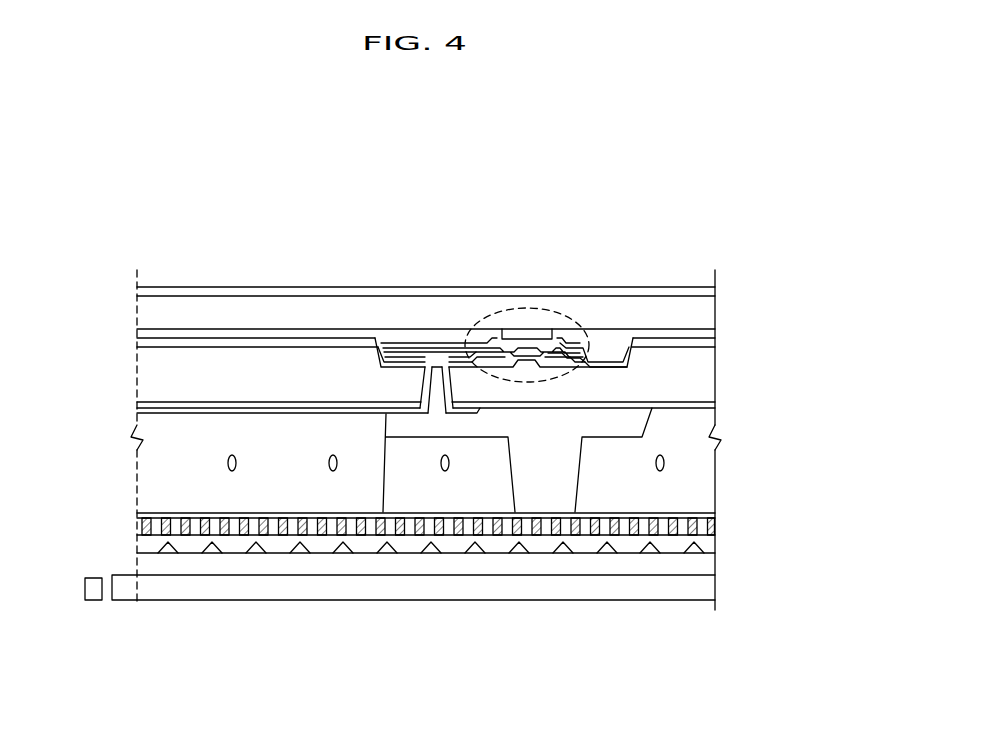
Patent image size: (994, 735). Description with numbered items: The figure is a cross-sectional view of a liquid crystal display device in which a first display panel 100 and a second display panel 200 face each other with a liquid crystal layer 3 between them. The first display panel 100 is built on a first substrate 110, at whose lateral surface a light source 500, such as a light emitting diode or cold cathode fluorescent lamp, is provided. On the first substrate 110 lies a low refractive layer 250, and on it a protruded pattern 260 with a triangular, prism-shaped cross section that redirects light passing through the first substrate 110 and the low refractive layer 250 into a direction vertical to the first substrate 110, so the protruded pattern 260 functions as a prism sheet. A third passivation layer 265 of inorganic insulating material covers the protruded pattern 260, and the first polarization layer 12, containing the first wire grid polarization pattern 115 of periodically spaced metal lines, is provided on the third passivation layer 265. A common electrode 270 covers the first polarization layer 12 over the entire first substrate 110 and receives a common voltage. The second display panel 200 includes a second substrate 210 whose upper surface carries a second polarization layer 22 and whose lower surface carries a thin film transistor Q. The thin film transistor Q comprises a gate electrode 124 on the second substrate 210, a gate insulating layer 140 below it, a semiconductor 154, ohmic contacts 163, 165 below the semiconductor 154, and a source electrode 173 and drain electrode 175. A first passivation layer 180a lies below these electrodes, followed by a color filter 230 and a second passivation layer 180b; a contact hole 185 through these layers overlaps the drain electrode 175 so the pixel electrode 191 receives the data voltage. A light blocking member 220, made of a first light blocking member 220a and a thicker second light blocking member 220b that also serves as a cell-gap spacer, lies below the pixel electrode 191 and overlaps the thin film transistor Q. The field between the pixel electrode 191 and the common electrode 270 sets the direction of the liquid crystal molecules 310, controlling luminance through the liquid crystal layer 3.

The second polarization layer 22 is at (128, 291).
The first polarization layer 12 is at (128, 523).
The second display panel 200 is at (732, 287).
The first display panel 100 is at (732, 513).
The liquid crystal layer 3 is at (732, 410).
The liquid crystal molecules 310 is at (240, 463).
The second substrate 210 is at (233, 317).
The color filter 230 is at (163, 365).
The pixel electrode 191 is at (192, 408).
The first passivation layer 180a is at (282, 342).
The second passivation layer 180b is at (310, 403).
The contact hole 185 is at (428, 388).
The drain electrode 175 is at (397, 357).
The source electrode 173 is at (600, 355).
The ohmic contact 165 is at (437, 352).
The ohmic contact 163 is at (617, 353).
The semiconductor 154 is at (570, 349).
The gate insulating layer 140 is at (463, 350).
The gate electrode 124 is at (525, 333).
The thin film transistor Q is at (490, 305).
The first light blocking member 220a is at (623, 427).
The second light blocking member 220b is at (548, 482).
The light blocking member 220 is at (650, 686).
The common electrode 270 is at (499, 515).
The first wire grid polarization pattern 115 is at (320, 531).
The third passivation layer 265 is at (233, 551).
The protruded pattern 260 is at (211, 552).
The low refractive layer 250 is at (447, 567).
The first substrate 110 is at (172, 583).
The light source 500 is at (92, 603).